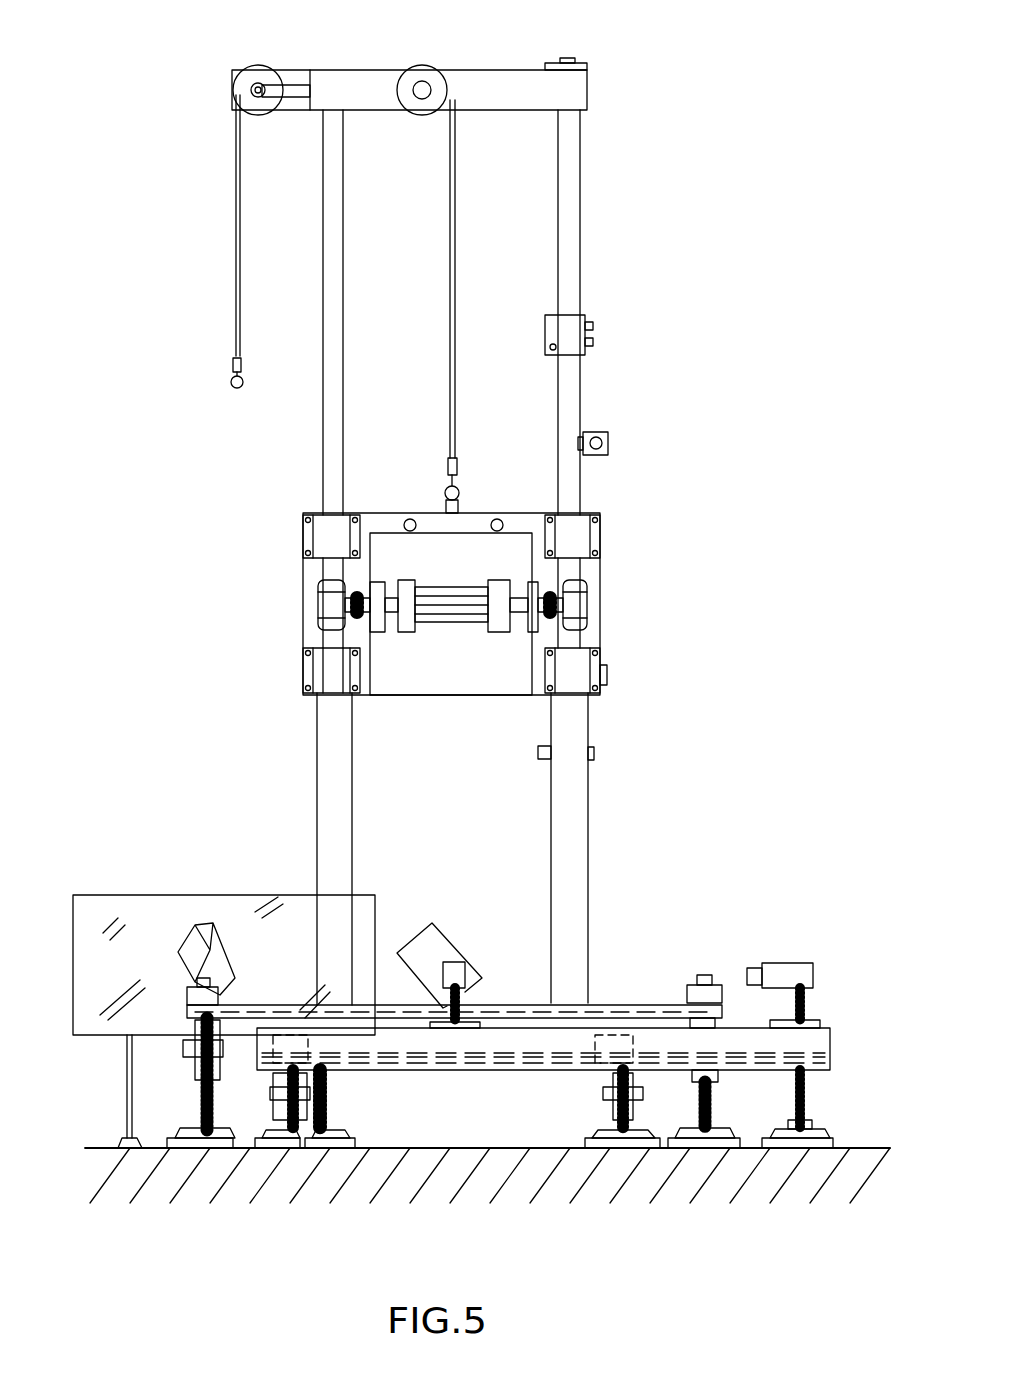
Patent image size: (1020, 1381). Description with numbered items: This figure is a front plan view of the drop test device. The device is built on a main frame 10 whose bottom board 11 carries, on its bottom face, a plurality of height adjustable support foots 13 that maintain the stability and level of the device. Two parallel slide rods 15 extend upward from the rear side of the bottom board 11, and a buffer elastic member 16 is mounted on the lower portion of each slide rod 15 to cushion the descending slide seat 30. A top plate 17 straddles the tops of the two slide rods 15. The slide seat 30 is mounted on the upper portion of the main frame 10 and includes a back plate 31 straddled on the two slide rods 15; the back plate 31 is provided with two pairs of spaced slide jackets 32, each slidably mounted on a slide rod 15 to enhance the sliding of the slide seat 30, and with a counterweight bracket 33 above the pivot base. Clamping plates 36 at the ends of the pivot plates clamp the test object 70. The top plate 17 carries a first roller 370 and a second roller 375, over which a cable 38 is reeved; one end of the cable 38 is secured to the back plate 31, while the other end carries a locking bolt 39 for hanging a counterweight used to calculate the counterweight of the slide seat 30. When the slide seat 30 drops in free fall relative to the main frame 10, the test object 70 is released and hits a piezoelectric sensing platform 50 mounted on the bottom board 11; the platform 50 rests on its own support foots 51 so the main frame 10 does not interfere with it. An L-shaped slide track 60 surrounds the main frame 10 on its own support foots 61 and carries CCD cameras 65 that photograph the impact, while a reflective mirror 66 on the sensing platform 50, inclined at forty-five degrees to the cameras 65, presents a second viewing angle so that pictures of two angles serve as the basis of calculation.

The main frame 10 is at (615, 848).
The bottom board 11 is at (430, 1070).
The height adjustable support foots 13 is at (359, 1149).
The slide rods 15 is at (571, 393).
The buffer elastic members 16 is at (573, 942).
The top plate 17 is at (510, 87).
The slide seat 30 is at (643, 573).
The back plate 31 is at (383, 660).
The slide jackets 32 is at (348, 694).
The counterweight bracket 33 is at (383, 553).
The clamping plate 36 is at (318, 596).
The cable 38 is at (448, 226).
The locking bolt 39 is at (232, 393).
The piezoelectric sensing platform 50 is at (258, 1004).
The support foots 51 is at (193, 1113).
The L-shaped slide track 60 is at (812, 1055).
The support foots 61 is at (808, 1125).
The CCD cameras 65 is at (790, 968).
The reflective mirror 66 is at (165, 915).
The test object 70 is at (420, 935).
The first roller 370 is at (254, 68).
The second roller 375 is at (418, 66).